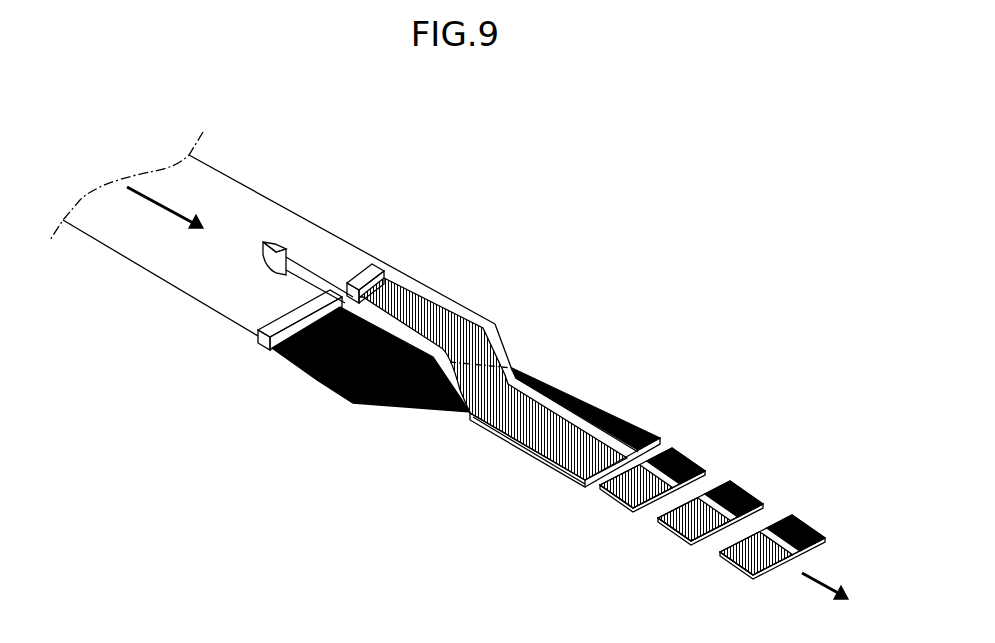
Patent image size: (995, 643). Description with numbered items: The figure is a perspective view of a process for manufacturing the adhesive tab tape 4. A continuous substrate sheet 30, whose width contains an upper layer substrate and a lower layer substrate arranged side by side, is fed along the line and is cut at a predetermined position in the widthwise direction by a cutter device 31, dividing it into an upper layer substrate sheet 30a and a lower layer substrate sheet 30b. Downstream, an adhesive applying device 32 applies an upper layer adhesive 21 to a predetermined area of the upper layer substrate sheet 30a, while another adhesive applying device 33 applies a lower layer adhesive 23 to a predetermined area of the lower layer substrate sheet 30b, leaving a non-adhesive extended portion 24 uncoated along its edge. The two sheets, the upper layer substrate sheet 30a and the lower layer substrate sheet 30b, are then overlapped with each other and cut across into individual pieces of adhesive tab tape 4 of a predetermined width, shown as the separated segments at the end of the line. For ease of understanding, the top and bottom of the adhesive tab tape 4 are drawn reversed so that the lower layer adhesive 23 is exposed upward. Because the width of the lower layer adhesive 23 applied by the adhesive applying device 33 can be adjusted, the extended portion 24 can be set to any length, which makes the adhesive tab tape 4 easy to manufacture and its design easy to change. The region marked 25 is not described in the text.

The adhesive tab tape 4 is at (765, 487).
The upper layer adhesive 21 is at (322, 380).
The lower layer adhesive 23 is at (425, 303).
The extended portion 24 is at (473, 317).
The second electrode 25 is at (630, 420).
The substrate sheet 30 is at (220, 183).
The upper layer substrate sheet 30a is at (233, 313).
The lower layer substrate sheet 30b is at (345, 248).
The cutter device 31 is at (273, 247).
The adhesive applying device 32 is at (255, 342).
The adhesive applying device 33 is at (388, 260).